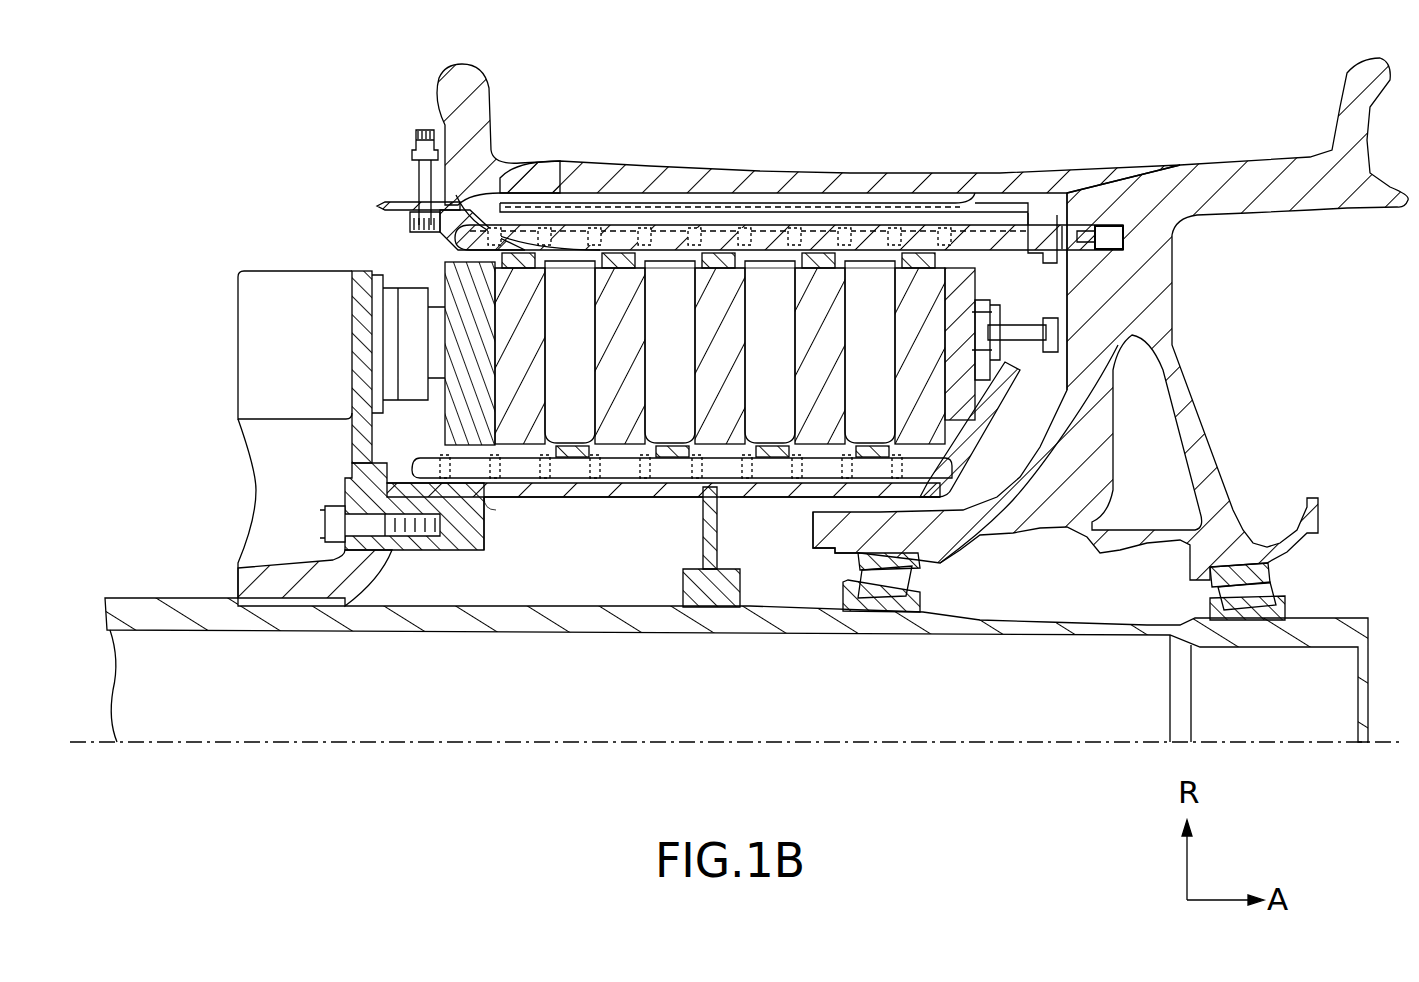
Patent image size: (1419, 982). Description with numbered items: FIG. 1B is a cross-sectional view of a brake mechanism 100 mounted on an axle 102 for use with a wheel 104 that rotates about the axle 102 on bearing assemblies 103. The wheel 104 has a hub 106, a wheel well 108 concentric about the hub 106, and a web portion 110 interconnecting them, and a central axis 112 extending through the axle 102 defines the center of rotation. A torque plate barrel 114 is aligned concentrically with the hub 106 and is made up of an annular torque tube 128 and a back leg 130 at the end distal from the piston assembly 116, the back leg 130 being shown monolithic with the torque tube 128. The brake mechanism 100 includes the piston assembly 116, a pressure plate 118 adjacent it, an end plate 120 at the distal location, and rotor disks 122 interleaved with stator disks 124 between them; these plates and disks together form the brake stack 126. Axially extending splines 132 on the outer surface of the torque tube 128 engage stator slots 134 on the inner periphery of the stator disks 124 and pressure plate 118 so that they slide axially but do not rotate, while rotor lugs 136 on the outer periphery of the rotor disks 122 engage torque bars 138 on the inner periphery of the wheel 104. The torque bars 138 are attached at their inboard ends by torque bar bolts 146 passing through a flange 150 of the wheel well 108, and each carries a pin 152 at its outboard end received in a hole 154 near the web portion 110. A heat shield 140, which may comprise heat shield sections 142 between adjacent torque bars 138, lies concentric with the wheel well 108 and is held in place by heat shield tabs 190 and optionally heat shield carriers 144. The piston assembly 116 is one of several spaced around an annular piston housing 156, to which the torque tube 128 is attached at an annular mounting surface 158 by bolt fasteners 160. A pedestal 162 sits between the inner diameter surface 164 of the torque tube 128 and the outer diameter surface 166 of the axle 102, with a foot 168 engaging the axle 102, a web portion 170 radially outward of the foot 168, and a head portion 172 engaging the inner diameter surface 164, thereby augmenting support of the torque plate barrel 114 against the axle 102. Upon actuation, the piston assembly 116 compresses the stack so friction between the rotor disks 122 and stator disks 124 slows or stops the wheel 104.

The brake mechanism 100 is at (238, 138).
The axle 102 is at (1035, 634).
The bearing assemblies 103 is at (1272, 592).
The wheel 104 is at (1196, 332).
The hub 106 is at (1008, 548).
The wheel well 108 is at (1060, 190).
The web portion 110 is at (1195, 405).
The central axis 112 is at (990, 745).
The torque plate barrel 114 is at (545, 497).
The piston assembly 116 is at (326, 252).
The pressure plate 118 is at (440, 275).
The end plate 120 is at (968, 280).
The rotor disks 122 is at (518, 290).
The stator disks 124 is at (670, 290).
The brake stack 126 is at (866, 260).
The torque tube 128 is at (505, 500).
The back leg 130 is at (985, 415).
The splines 132 is at (420, 480).
The stator slots 134 is at (822, 492).
The rotor lugs 136 is at (600, 242).
The torque bars 138 is at (975, 240).
The heat shield 140 is at (718, 265).
The heat shield sections 142 is at (830, 292).
The heat shield carriers 144 is at (482, 185).
The torque bar bolts 146 is at (422, 130).
The flange 150 is at (395, 200).
The pin 152 is at (1090, 225).
The hole 154 is at (1110, 235).
The annular piston housing 156 is at (234, 277).
The annular mounting surface 158 is at (433, 552).
The bolt fasteners 160 is at (325, 522).
The pedestal 162 is at (706, 528).
The inner diameter surface 164 is at (590, 498).
The outer diameter surface 166 is at (742, 605).
The foot 168 is at (740, 570).
The web portion 170 is at (690, 558).
The head portion 172 is at (703, 500).
The heat shield tabs 190 is at (1052, 272).